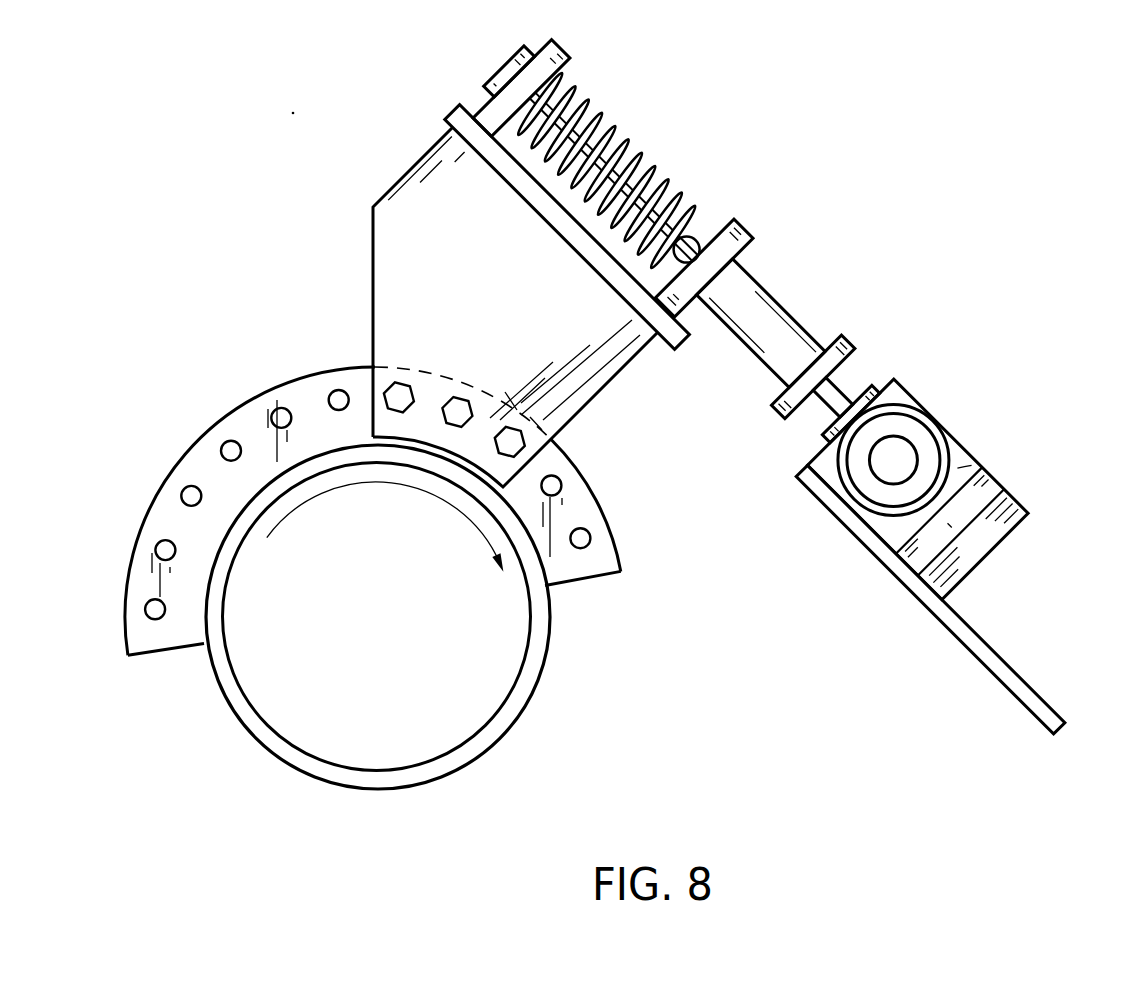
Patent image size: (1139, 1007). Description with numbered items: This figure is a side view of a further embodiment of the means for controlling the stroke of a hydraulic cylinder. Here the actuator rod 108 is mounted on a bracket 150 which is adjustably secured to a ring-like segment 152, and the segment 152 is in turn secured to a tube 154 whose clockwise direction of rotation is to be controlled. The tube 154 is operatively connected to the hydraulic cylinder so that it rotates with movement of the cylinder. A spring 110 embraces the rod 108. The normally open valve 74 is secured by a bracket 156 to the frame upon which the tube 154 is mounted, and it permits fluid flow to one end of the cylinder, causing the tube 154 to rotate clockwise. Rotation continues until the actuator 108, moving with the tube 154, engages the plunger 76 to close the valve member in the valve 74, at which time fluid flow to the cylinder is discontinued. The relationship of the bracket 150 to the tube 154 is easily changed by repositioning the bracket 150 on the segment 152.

The valve 74 is at (982, 442).
The plunger 76 is at (840, 388).
The actuator rod 108 is at (755, 290).
The spring 110 is at (627, 138).
The bracket 150 is at (613, 347).
The ring-like segment 152 is at (600, 559).
The tube 154 is at (548, 658).
The bracket 156 is at (985, 650).